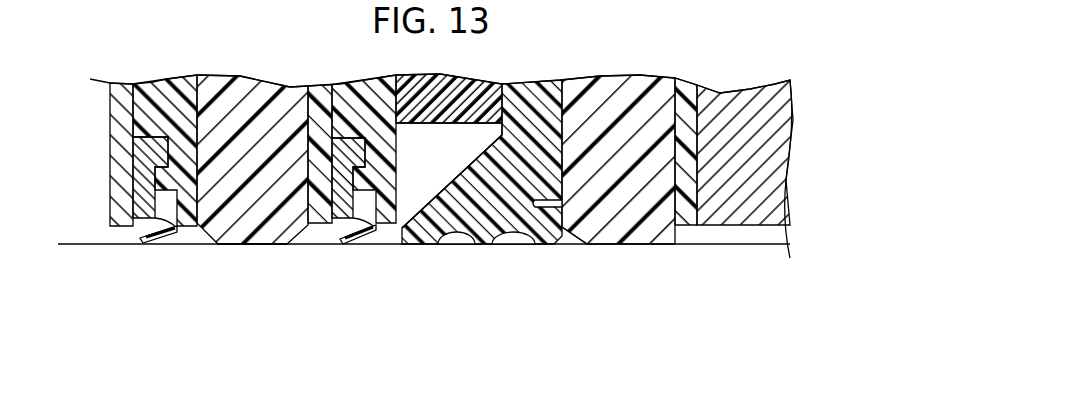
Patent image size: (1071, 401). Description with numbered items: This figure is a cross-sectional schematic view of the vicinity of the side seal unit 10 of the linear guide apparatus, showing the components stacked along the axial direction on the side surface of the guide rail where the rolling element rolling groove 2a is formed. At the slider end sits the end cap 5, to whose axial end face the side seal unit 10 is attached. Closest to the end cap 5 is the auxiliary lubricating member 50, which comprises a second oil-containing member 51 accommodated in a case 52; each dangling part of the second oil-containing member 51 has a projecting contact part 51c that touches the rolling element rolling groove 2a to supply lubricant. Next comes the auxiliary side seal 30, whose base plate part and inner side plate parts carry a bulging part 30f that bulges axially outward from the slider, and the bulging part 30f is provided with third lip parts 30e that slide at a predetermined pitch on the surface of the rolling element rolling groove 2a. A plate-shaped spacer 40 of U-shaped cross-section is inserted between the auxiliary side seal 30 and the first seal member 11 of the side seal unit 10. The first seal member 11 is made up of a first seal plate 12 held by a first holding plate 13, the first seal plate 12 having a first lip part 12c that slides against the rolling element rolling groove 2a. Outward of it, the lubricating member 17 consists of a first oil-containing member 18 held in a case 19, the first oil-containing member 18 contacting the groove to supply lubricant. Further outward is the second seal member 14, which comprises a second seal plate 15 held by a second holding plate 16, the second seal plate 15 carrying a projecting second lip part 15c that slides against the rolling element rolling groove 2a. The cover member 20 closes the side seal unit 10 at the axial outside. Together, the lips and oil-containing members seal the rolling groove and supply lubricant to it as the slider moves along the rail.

The rolling element rolling groove 2a is at (78, 243).
The end cap 5 is at (737, 106).
The side seal unit 10 is at (244, 227).
The first seal member 11 is at (355, 207).
The first seal plate 12 is at (343, 222).
The first lip part 12c is at (346, 238).
The first holding plate 13 is at (382, 226).
The second seal member 14 is at (156, 208).
The second seal plate 15 is at (144, 222).
The second lip part 15c is at (148, 237).
The second holding plate 16 is at (185, 231).
The lubricating member 17 is at (264, 207).
The first oil-containing member 18 is at (248, 246).
The case 19 is at (318, 225).
The cover member 20 is at (122, 228).
The auxiliary side seal 30 is at (483, 192).
The third lip part 30e is at (484, 246).
The bulging part 30f is at (460, 194).
The spacer 40 is at (434, 124).
The auxiliary lubricating member 50 is at (629, 207).
The second oil-containing member 51 is at (618, 192).
The contact part 51c is at (605, 238).
The case 52 is at (683, 224).